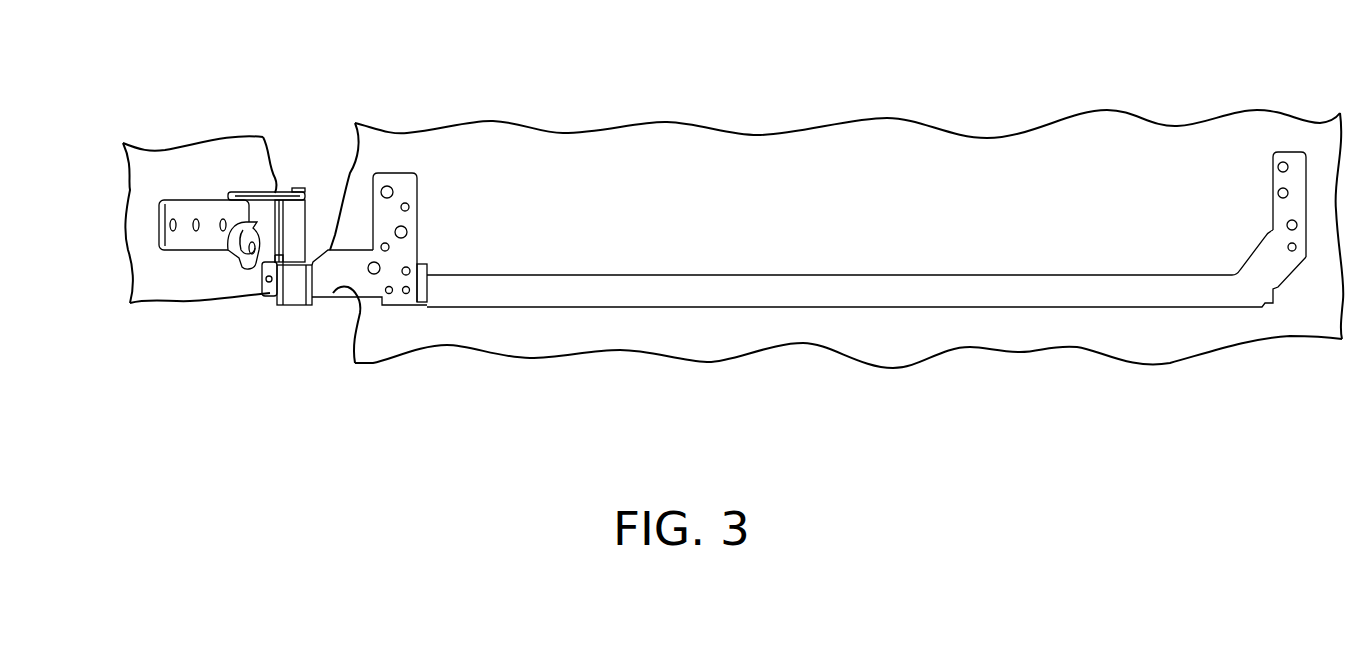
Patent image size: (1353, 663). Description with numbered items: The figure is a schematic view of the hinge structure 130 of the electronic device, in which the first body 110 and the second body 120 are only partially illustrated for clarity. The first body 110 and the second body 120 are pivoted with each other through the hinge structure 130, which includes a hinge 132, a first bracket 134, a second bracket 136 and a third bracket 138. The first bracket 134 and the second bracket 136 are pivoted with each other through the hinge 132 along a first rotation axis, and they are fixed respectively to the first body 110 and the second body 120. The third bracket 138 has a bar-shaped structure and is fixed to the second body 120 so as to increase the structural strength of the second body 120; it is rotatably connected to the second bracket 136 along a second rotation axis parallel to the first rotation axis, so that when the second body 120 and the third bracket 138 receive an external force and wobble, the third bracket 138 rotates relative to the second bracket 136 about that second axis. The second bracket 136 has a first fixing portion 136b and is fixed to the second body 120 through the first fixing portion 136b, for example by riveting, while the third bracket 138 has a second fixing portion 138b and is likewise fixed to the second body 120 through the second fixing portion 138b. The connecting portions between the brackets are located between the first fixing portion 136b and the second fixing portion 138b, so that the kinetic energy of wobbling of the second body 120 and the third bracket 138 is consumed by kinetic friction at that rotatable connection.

The first body 110 is at (163, 283).
The second body 120 is at (1148, 157).
The hinge structure 130 is at (249, 256).
The hinge 132 is at (297, 232).
The first bracket 134 is at (183, 205).
The second bracket 136 is at (409, 245).
The first fixing portion 136b is at (407, 249).
The third bracket 138 is at (875, 176).
The second fixing portion 138b is at (1297, 158).